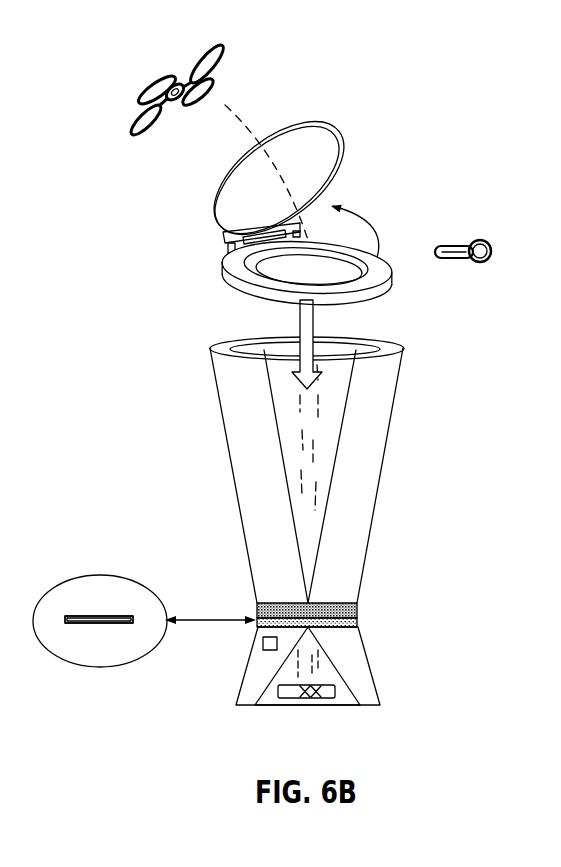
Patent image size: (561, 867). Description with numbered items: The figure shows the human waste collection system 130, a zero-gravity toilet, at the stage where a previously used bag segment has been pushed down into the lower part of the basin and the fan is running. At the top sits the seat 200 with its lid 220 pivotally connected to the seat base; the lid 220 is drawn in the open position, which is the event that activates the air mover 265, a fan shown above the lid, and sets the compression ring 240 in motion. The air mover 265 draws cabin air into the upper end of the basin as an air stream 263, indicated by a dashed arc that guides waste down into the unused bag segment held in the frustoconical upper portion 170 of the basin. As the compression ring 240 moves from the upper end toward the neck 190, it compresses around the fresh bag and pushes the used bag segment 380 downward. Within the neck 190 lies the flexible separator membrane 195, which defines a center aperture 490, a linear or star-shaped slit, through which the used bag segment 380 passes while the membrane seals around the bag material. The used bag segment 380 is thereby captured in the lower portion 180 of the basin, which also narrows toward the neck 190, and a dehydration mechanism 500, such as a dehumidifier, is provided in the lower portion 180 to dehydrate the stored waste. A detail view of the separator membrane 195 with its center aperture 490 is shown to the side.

The human waste collection system 130 is at (458, 75).
The air mover 265 is at (152, 89).
The air stream 263 is at (222, 103).
The lid 220 is at (308, 126).
The seat 200 is at (377, 282).
The upper portion 170 is at (367, 475).
The compression ring 240 is at (360, 605).
The neck 190 is at (358, 612).
The separator membrane 195 is at (357, 623).
The lower portion 180 is at (378, 694).
The center aperture 490 is at (102, 608).
The dehydration mechanism 500 is at (268, 651).
The used bag segment 380 is at (343, 693).